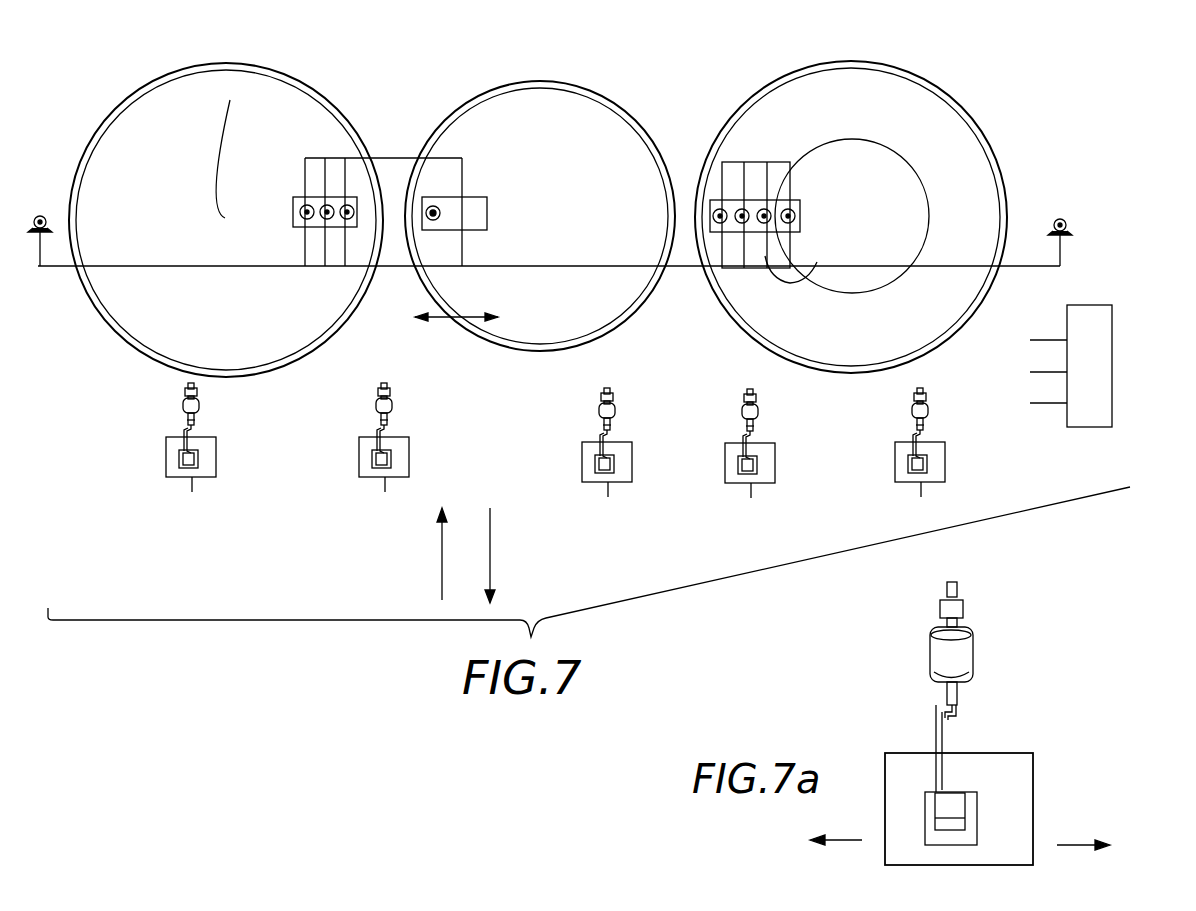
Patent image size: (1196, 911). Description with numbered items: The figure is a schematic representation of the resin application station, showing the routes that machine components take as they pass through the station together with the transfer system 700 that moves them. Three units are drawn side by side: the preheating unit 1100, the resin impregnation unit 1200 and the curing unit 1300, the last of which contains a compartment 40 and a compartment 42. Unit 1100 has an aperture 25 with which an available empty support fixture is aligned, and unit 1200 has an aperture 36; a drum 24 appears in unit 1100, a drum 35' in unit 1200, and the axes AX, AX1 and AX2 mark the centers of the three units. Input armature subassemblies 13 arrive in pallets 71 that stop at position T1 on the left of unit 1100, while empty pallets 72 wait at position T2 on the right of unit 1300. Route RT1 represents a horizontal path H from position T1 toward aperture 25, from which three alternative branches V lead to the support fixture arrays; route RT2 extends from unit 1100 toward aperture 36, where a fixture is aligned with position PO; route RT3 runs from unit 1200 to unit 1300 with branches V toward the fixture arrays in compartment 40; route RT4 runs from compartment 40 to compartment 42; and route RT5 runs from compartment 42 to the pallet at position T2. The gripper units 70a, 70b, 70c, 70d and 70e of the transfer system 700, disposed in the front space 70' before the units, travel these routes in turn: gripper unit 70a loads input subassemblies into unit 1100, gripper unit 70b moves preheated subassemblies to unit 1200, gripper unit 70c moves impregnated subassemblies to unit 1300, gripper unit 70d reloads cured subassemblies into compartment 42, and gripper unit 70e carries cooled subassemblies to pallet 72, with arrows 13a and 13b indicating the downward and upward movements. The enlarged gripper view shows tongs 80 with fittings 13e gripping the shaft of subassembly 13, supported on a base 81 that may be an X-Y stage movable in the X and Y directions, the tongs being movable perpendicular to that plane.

In FIG. 7, the preheating unit 1100 is at (92, 100).
In FIG. 7, the resin impregnation unit 1200 is at (588, 70).
In FIG. 7, the curing unit 1300 is at (1018, 104).
In FIG. 7, the first drum 24 is at (282, 102).
In FIG. 7, the second drum 35' is at (654, 109).
In FIG. 7, the compartment 40 is at (925, 116).
In FIG. 7, the compartment 42 is at (915, 220).
In FIG. 7, the aperture 25 is at (293, 212).
In FIG. 7, the aperture 36 is at (487, 200).
In FIG. 7, the axis of first drum AX is at (225, 222).
In FIG. 7, the axis of second drum AX1 is at (540, 220).
In FIG. 7, the axis of third drum AX2 is at (850, 218).
In FIG. 7, the path H is at (165, 268).
In FIG. 7, the route branches V is at (305, 172).
In FIG. 7, the route RT1 is at (270, 268).
In FIG. 7, the route RT2 is at (385, 158).
In FIG. 7, the route RT3 is at (545, 268).
In FIG. 7, the route RT4 is at (780, 162).
In FIG. 7, the route RT5 is at (865, 268).
In FIG. 7, the position PO is at (430, 220).
In FIG. 7, the position T1 is at (40, 212).
In FIG. 7, the position T2 is at (1060, 214).
In FIG. 7, the pallet 71 is at (33, 238).
In FIG. 7, the empty pallet 72 is at (1112, 342).
In FIG. 7, the transfer system 700 is at (127, 440).
In FIG. 7, the gripper unit 70a is at (170, 480).
In FIG. 7, the gripper unit 70b is at (368, 480).
In FIG. 7, the gripper unit 70c is at (590, 484).
In FIG. 7, the gripper unit 70d is at (728, 484).
In FIG. 7, the gripper unit 70e is at (900, 484).
In FIG. 7, the front space 70' is at (350, 566).
In FIG. 7, the downward movement 13a is at (490, 556).
In FIG. 7, the upward movement 13b is at (440, 574).
In FIG. 7a, the subassembly 13 is at (975, 660).
In FIG. 7a, the container fitting 13e is at (947, 585).
In FIG. 7a, the tongs 80 is at (928, 730).
In FIG. 7a, the base 81 is at (892, 772).
In FIG. 7a, the X direction X is at (1060, 846).
In FIG. 7a, the Y direction Y is at (852, 840).